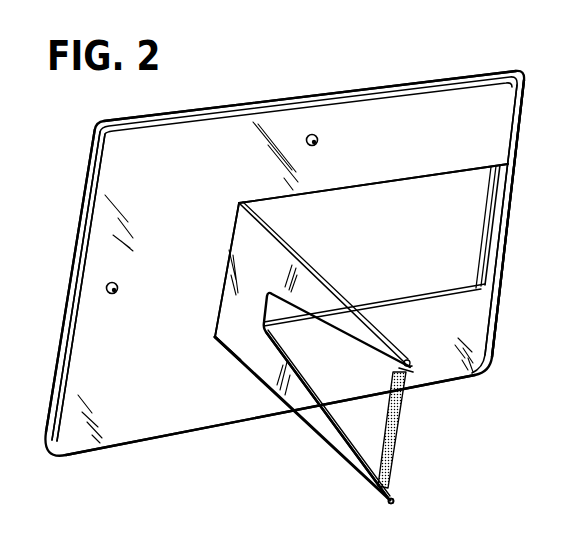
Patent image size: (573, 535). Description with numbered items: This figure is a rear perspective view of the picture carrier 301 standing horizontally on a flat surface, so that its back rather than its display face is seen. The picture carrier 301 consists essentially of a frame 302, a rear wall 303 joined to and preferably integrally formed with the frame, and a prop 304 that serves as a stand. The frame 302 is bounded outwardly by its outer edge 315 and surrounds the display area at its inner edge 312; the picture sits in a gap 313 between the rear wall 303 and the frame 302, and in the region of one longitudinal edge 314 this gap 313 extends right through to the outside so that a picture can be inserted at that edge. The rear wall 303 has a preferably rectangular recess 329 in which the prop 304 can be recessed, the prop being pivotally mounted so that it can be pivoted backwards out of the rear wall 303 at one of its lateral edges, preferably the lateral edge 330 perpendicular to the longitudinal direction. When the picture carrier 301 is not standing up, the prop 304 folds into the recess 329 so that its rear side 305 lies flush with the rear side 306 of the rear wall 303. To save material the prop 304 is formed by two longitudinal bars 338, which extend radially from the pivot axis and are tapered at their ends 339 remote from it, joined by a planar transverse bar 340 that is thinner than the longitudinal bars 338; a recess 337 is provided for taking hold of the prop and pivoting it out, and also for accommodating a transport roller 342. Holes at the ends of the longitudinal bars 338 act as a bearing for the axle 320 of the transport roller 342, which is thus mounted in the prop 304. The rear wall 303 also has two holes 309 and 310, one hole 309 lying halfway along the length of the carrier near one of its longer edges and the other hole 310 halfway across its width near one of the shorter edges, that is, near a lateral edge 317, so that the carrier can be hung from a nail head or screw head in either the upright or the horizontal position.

The picture carrier 301 is at (284, 230).
The frame 302 is at (373, 245).
The rear wall 303 is at (270, 424).
The prop 304 is at (304, 420).
The rear side 305 is at (206, 359).
The rear side 306 is at (76, 285).
The hole 309 is at (340, 133).
The hole 310 is at (135, 311).
The inner edge 312 is at (458, 227).
The gap 313 is at (310, 80).
The longitudinal edge 314 is at (526, 220).
The outer edge 315 is at (532, 218).
The lateral edge 317 is at (528, 218).
The axle 320 is at (416, 339).
The recess 329 is at (373, 168).
The lateral edge 330 is at (291, 279).
The recess 337 is at (337, 395).
The longitudinal bars 338 is at (327, 415).
The ends 339 is at (397, 441).
The transverse bar 340 is at (202, 270).
The transport roller 342 is at (420, 430).